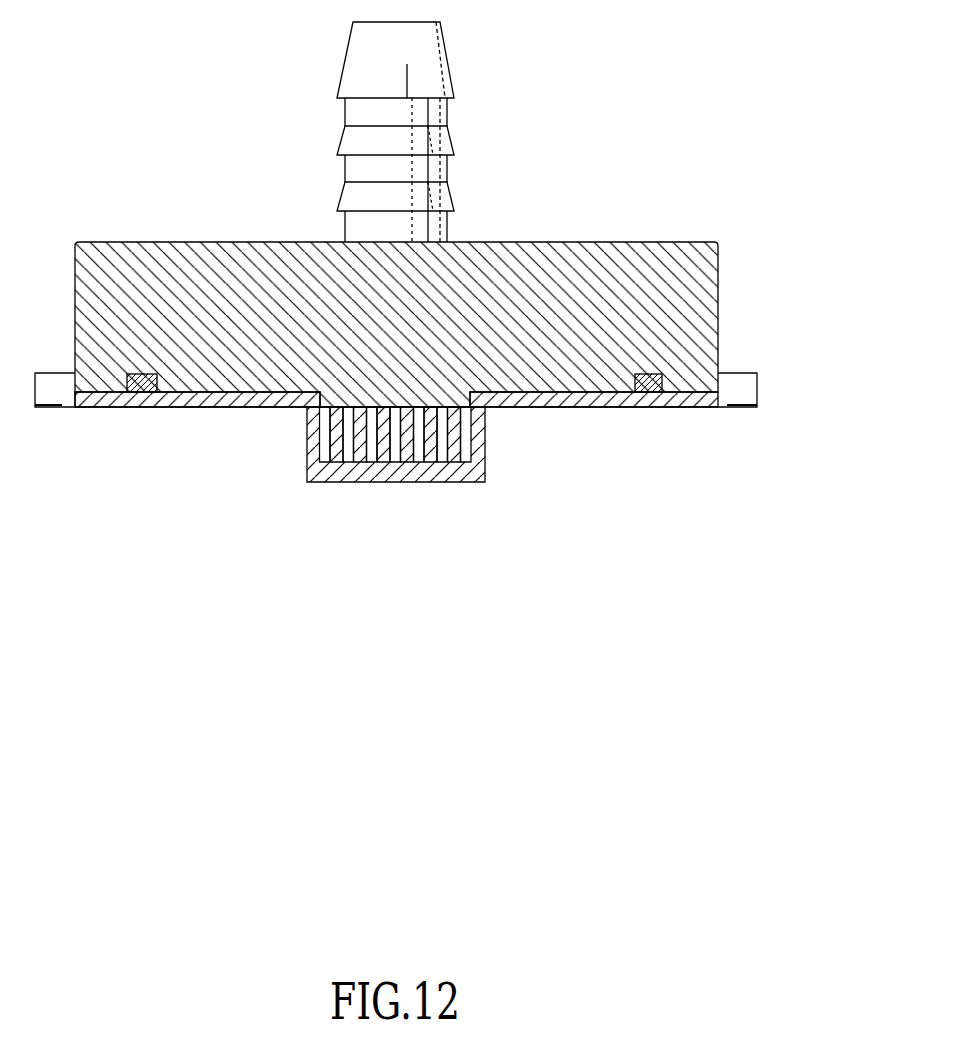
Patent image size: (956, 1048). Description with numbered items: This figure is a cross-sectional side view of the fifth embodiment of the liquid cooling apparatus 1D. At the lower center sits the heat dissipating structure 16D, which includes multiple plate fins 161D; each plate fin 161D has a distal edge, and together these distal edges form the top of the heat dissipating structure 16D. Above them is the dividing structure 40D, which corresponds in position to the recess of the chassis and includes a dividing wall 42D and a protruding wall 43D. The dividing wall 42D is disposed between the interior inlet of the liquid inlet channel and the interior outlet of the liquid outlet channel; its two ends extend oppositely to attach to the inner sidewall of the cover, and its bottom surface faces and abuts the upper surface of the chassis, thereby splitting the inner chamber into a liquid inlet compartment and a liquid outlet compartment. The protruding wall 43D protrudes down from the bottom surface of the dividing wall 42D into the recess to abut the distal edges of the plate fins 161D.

The liquid cooling apparatus 1D is at (491, 80).
The dividing structure 40D is at (550, 298).
The dividing wall 42D is at (202, 360).
The protruding wall 43D is at (447, 400).
The heat dissipating structure 16D is at (347, 432).
The plate fins 161D is at (410, 438).